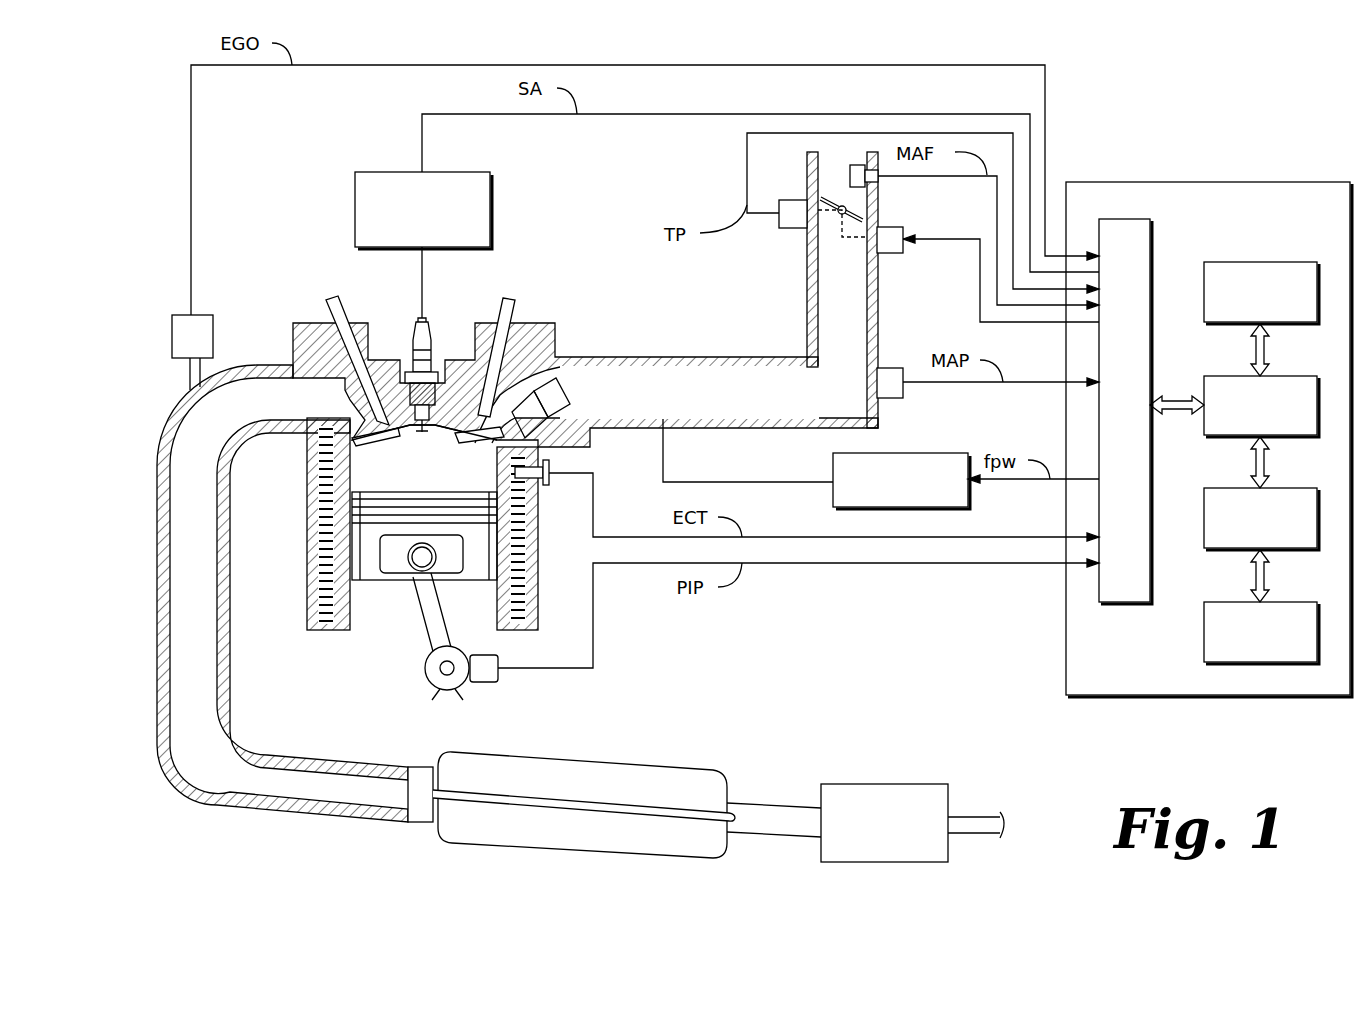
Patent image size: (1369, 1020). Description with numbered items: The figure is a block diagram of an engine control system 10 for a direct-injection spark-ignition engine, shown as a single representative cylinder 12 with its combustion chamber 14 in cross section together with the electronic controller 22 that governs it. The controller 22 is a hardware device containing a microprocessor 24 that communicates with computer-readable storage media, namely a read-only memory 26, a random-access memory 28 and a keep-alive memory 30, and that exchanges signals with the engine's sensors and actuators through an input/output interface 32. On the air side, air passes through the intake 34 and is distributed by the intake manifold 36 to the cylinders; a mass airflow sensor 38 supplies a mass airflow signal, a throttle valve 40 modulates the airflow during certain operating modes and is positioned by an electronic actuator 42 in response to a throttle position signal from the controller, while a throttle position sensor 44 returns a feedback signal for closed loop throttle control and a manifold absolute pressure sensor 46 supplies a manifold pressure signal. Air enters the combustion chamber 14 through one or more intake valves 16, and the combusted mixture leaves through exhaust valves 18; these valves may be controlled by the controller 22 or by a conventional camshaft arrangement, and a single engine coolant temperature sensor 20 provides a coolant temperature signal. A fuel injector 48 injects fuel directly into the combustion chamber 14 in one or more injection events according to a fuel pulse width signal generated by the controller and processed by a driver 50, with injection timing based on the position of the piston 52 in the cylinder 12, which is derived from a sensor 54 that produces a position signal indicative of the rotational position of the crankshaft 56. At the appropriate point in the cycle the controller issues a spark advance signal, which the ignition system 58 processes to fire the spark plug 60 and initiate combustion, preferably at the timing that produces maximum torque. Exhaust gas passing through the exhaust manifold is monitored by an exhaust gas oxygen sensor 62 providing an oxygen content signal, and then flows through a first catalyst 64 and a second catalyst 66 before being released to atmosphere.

The system 10 is at (310, 240).
The cylinder 12 is at (362, 620).
The combustion chamber 14 is at (320, 478).
The intake valve 16 is at (503, 305).
The exhaust valve 18 is at (322, 305).
The engine coolant temperature sensor 20 is at (552, 470).
The controller 22 is at (1218, 182).
The microprocessor 24 is at (1204, 392).
The read-only memory 26 is at (1204, 284).
The random-access memory 28 is at (1204, 507).
The keep-alive memory 30 is at (1204, 620).
The input/output interface 32 is at (1125, 219).
The intake 34 is at (822, 283).
The intake manifold 36 is at (705, 383).
The mass airflow sensor 38 is at (857, 165).
The throttle valve 40 is at (838, 218).
The actuator 42 is at (893, 255).
The throttle position sensor 44 is at (779, 205).
The manifold absolute pressure sensor 46 is at (893, 368).
The fuel injector 48 is at (558, 395).
The driver 50 is at (905, 453).
The piston 52 is at (372, 572).
The sensor 54 is at (492, 688).
The crankshaft 56 is at (432, 688).
The ignition system 58 is at (368, 172).
The spark plug 60 is at (408, 343).
The exhaust gas oxygen sensor 62 is at (172, 325).
The first catalyst 64 is at (650, 760).
The second catalyst 66 is at (905, 784).